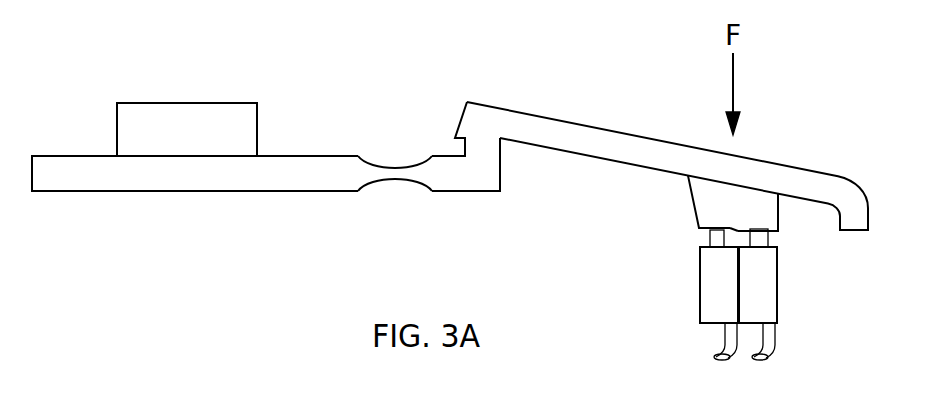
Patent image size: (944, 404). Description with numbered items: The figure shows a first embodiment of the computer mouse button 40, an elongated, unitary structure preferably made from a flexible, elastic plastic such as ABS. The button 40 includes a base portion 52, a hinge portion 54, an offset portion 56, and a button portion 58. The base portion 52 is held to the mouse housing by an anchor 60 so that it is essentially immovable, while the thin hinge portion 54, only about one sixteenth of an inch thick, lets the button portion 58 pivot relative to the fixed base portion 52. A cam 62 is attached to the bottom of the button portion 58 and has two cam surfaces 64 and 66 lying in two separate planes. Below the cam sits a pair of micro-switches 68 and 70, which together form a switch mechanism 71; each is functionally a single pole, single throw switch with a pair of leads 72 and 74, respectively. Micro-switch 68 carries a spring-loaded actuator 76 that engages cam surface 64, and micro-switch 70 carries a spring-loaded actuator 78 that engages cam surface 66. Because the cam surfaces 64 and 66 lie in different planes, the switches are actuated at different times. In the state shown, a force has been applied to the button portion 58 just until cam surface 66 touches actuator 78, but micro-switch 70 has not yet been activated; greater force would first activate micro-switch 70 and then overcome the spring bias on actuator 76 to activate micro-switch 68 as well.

The button 40 is at (630, 100).
The base portion 52 is at (107, 177).
The hinge portion 54 is at (380, 200).
The offset portion 56 is at (480, 156).
The button portion 58 is at (617, 150).
The anchor 60 is at (112, 131).
The cam 62 is at (720, 209).
The cam surface 64 is at (740, 225).
The cam surface 66 is at (777, 235).
The micro-switch 68 is at (692, 292).
The micro-switch 70 is at (785, 294).
The switch mechanism 71 is at (762, 295).
The leads 72 is at (720, 357).
The leads 74 is at (772, 358).
The spring-loaded actuator 76 is at (720, 237).
The spring-loaded actuator 78 is at (768, 238).